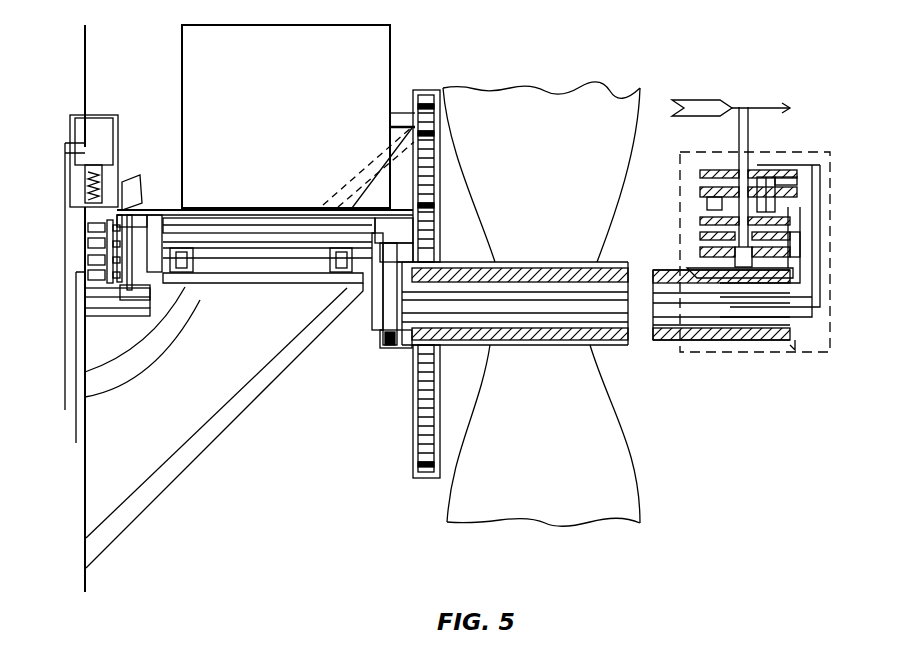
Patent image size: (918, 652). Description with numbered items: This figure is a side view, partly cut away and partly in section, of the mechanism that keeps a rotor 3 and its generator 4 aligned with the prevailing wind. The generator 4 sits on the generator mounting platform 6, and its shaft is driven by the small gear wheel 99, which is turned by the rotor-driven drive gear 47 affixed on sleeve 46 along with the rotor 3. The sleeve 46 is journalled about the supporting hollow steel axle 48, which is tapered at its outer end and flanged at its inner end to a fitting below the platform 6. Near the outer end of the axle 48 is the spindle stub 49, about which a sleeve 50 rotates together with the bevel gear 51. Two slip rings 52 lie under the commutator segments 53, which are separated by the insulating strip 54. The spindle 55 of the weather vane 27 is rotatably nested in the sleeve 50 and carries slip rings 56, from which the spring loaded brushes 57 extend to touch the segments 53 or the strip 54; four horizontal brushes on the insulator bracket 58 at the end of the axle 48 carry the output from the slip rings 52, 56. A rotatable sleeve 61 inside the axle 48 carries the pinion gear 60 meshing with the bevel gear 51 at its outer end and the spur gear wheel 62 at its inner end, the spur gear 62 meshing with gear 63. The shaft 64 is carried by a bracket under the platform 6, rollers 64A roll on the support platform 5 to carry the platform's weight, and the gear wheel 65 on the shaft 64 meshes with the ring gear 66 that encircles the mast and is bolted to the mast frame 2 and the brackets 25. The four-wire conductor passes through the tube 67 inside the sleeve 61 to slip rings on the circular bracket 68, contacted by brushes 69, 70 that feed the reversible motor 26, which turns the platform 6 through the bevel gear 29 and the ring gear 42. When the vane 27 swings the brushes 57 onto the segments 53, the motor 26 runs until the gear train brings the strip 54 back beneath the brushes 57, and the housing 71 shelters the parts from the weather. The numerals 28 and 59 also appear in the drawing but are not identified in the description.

The mast frame 2 is at (90, 48).
The rotor 3 is at (568, 95).
The generator 4 is at (385, 40).
The support platform 5 is at (263, 284).
The generator mounting platform 6 is at (238, 212).
The brackets 25 is at (138, 360).
The reversible motor 26 is at (108, 128).
The weather vane 27 is at (744, 107).
The spring 28 is at (88, 187).
The bevel gear 29 is at (138, 178).
The ring gear 42 is at (135, 200).
The sleeve 46 is at (470, 263).
The drive gear 47 is at (428, 418).
The hollow steel axle 48 is at (528, 266).
The spindle stub 49 is at (740, 272).
The sleeve 50 is at (700, 232).
The bevel gear 51 is at (780, 272).
The slip rings 52 is at (700, 245).
The commutator segments 53 is at (790, 216).
The insulating strip 54 is at (790, 234).
The spindle 55 is at (739, 125).
The slip rings 56 is at (700, 174).
The spring loaded brushes 57 is at (770, 174).
The insulator bracket 58 is at (790, 250).
The sleeve 59 is at (680, 315).
The pinion gear 60 is at (797, 345).
The rotatable sleeve 61 is at (510, 330).
The spur gear wheel 62 is at (385, 338).
The gear 63 is at (415, 215).
The shaft 64 is at (290, 232).
The rollers 64A is at (182, 275).
The gear wheel 65 is at (150, 212).
The ring gear 66 is at (140, 300).
The tube 67 is at (655, 312).
The circular bracket 68 is at (130, 290).
The brushes 69 is at (88, 262).
The brushes 70 is at (88, 228).
The housing 71 is at (790, 150).
The small gear wheel 99 is at (430, 90).